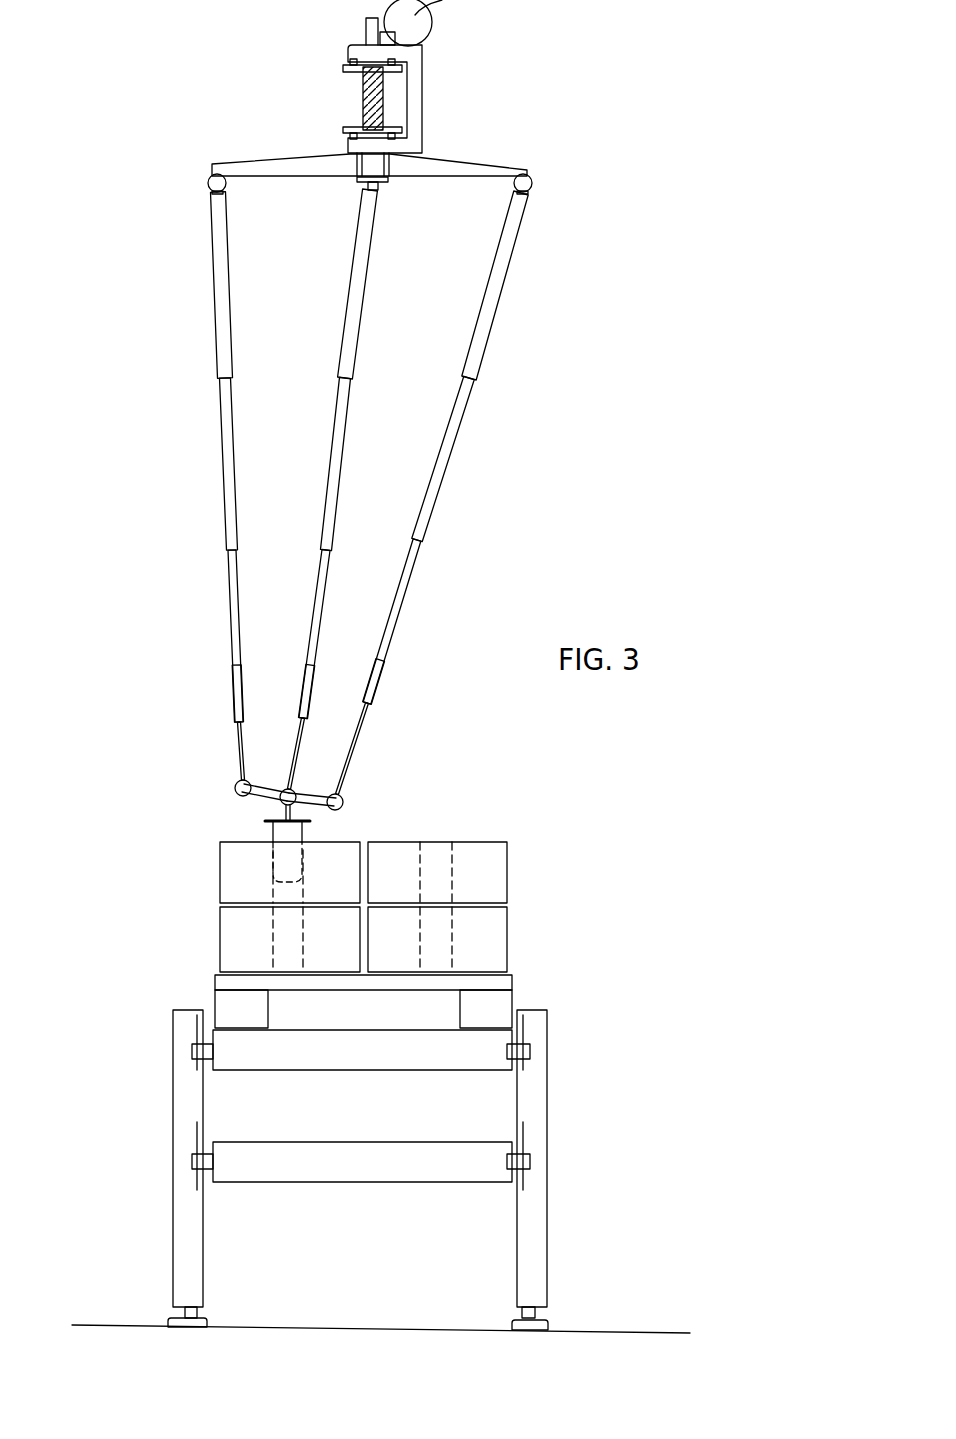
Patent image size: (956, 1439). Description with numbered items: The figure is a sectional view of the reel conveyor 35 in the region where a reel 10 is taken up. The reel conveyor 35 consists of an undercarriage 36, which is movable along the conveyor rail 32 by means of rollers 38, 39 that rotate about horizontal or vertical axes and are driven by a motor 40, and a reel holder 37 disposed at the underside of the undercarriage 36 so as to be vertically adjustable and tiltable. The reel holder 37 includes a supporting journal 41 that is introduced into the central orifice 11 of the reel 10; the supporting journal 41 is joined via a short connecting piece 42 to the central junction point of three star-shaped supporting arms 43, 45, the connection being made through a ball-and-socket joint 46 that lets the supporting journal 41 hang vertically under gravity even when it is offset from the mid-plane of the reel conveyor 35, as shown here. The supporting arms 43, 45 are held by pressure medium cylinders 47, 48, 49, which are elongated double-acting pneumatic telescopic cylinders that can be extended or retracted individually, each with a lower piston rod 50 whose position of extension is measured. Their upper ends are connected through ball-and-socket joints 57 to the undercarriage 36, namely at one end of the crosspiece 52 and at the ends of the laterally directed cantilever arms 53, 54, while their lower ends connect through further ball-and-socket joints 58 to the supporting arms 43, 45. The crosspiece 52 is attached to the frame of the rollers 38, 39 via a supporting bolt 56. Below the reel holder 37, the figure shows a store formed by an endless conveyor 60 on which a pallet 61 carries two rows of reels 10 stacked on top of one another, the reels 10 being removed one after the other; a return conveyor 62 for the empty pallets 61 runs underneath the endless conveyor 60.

The reel 10 is at (356, 879).
The central orifice 11 is at (450, 840).
The conveyor rail 32 is at (362, 100).
The reel conveyor 35 is at (473, 83).
The undercarriage 36 is at (378, 492).
The reel holder 37 is at (329, 803).
The roller 38 is at (345, 64).
The roller 39 is at (383, 44).
The motor 40 is at (470, 0).
The supporting journal 41 is at (285, 835).
The connecting piece 42 is at (287, 812).
The supporting arm 43 is at (313, 790).
The supporting arm 45 is at (270, 783).
The ball-and-socket joint 46 is at (298, 808).
The pressure medium cylinder 47 is at (443, 510).
The pressure medium cylinder 48 is at (340, 508).
The pressure medium cylinder 49 is at (218, 472).
The piston rod 50 is at (235, 740).
The crosspiece 52 is at (363, 91).
The cantilever arm 53 is at (507, 163).
The cantilever arm 54 is at (341, 91).
The supporting bolt 56 is at (353, 181).
The ball-and-socket joint 57 is at (207, 182).
The ball-and-socket joint 58 is at (236, 783).
The endless conveyor 60 is at (480, 1055).
The pallet 61 is at (497, 985).
The return conveyor 62 is at (472, 1163).